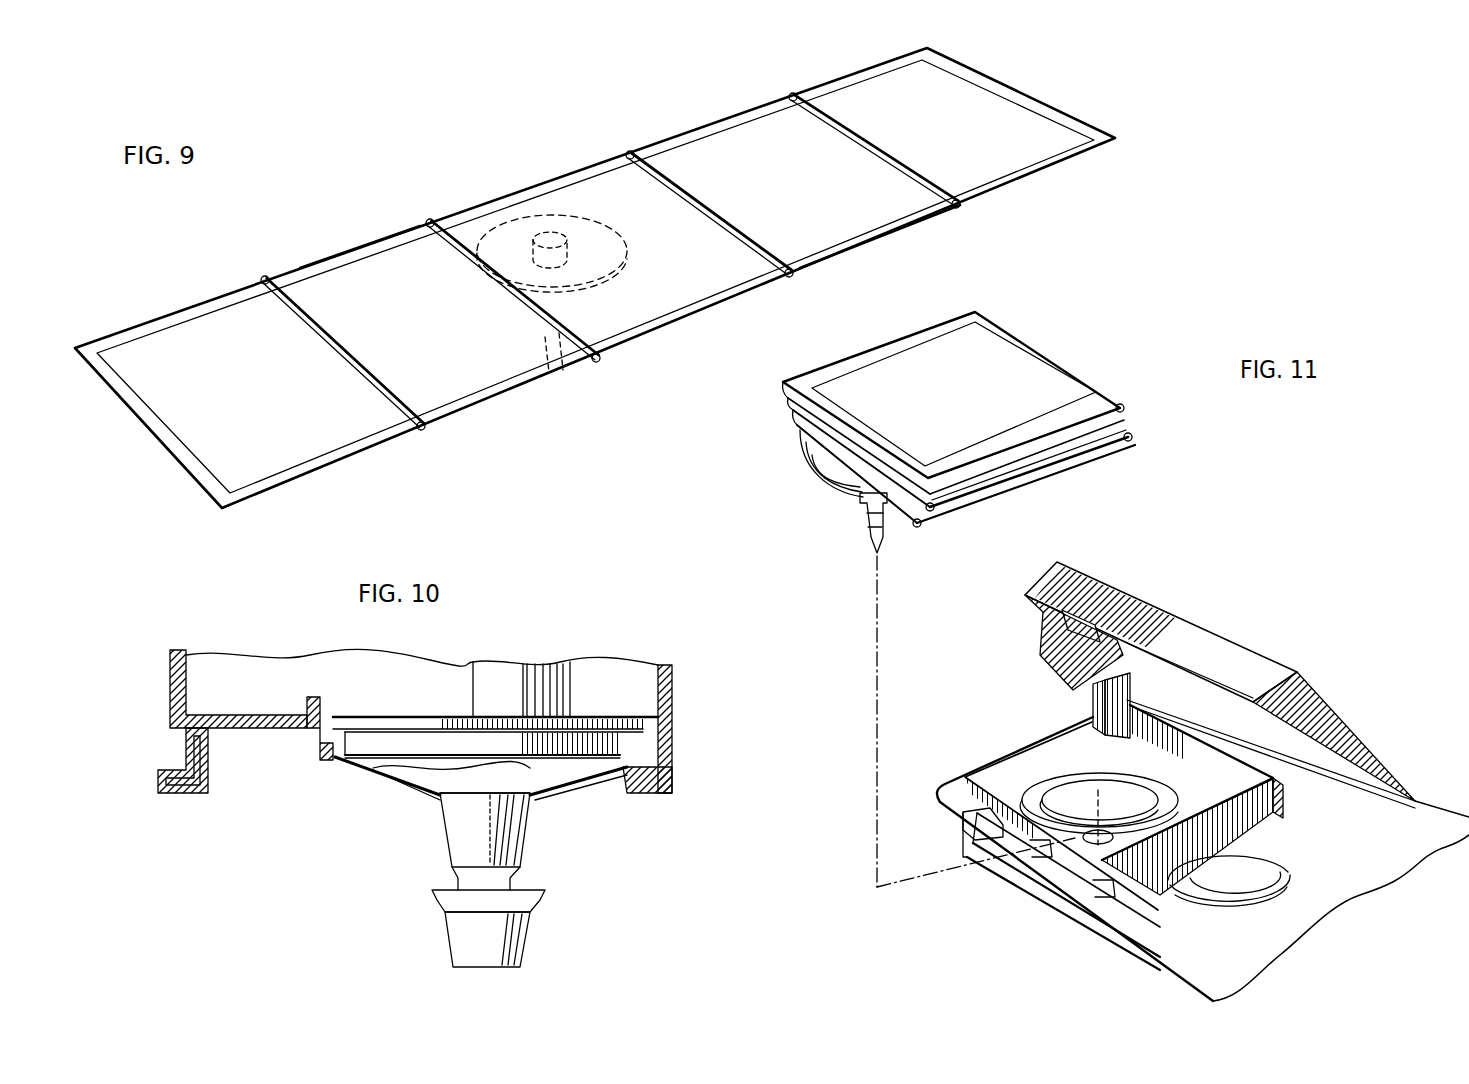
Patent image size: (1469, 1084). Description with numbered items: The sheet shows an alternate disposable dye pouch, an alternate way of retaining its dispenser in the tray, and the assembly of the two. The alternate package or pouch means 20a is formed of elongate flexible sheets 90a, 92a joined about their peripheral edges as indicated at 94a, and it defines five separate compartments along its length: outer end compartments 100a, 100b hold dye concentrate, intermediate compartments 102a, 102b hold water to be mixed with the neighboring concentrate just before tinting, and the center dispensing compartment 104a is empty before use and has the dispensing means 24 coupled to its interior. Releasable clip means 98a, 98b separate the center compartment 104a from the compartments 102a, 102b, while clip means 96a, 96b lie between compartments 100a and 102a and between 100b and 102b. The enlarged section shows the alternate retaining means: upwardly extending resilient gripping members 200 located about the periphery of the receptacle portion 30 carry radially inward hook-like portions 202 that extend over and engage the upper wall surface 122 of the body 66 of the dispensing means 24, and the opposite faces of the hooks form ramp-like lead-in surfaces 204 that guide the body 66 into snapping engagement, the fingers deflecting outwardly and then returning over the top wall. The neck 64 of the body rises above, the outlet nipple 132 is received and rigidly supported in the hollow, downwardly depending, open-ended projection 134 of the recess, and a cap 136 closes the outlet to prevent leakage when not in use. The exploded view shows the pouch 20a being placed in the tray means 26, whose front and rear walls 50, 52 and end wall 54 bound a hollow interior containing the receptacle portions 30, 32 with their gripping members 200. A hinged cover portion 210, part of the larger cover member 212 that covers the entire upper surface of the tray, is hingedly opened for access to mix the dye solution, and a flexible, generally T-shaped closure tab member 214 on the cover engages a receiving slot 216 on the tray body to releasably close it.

In FIG. 9, the package or pouch means 20a is at (503, 180).
In FIG. 11, the package or pouch means 20a is at (1040, 277).
In FIG. 9, the dispensing means 24 is at (537, 323).
In FIG. 10, the dispensing means 24 is at (437, 766).
In FIG. 11, the dispensing means 24 is at (823, 477).
In FIG. 10, the tray means 26 is at (243, 742).
In FIG. 11, the tray means 26 is at (1095, 945).
In FIG. 10, the receptacle portion 30 is at (352, 777).
In FIG. 11, the receptacle portion 30 is at (1142, 836).
In FIG. 11, the receptacle portion 32 is at (1229, 921).
In FIG. 10, the side wall portion 50 is at (186, 660).
In FIG. 11, the side wall portion 50 is at (1222, 765).
In FIG. 10, the side wall portion 52 is at (672, 672).
In FIG. 11, the side wall portion 52 is at (1040, 900).
In FIG. 11, the end wall 54 is at (983, 780).
In FIG. 10, the neck 64 is at (572, 675).
In FIG. 10, the body 66 is at (650, 752).
In FIG. 9, the flexible sheet 90a is at (682, 150).
In FIG. 9, the flexible sheet 92a is at (890, 230).
In FIG. 9, the peripheral edge joint 94a is at (355, 253).
In FIG. 9, the clip means 96a is at (265, 280).
In FIG. 11, the clip means 96a is at (1120, 405).
In FIG. 9, the clip means 96b is at (793, 97).
In FIG. 11, the clip means 96b is at (940, 512).
In FIG. 9, the clip means 98a is at (430, 222).
In FIG. 11, the clip means 98a is at (918, 528).
In FIG. 9, the clip means 98b is at (630, 154).
In FIG. 11, the clip means 98b is at (1132, 436).
In FIG. 9, the compartment 100a is at (219, 398).
In FIG. 9, the compartment 100b is at (936, 135).
In FIG. 9, the intermediate compartment 102a is at (396, 303).
In FIG. 9, the intermediate compartment 102b is at (790, 198).
In FIG. 9, the dispensing compartment 104a is at (659, 238).
In FIG. 10, the upper wall surface 122 is at (453, 723).
In FIG. 11, the outlet nipple 132 is at (872, 503).
In FIG. 10, the projection 134 is at (528, 836).
In FIG. 10, the cap 136 is at (525, 940).
In FIG. 10, the resilient gripping members 200 is at (318, 705).
In FIG. 11, the resilient gripping members 200 is at (1167, 783).
In FIG. 10, the hook-like portions 202 is at (335, 723).
In FIG. 10, the lead-in surfaces 204 is at (322, 707).
In FIG. 11, the hinged cover portion 210 is at (1223, 640).
In FIG. 11, the cover member 212 is at (1371, 883).
In FIG. 11, the closure tab member 214 is at (1112, 625).
In FIG. 11, the receiving slot 216 is at (970, 813).